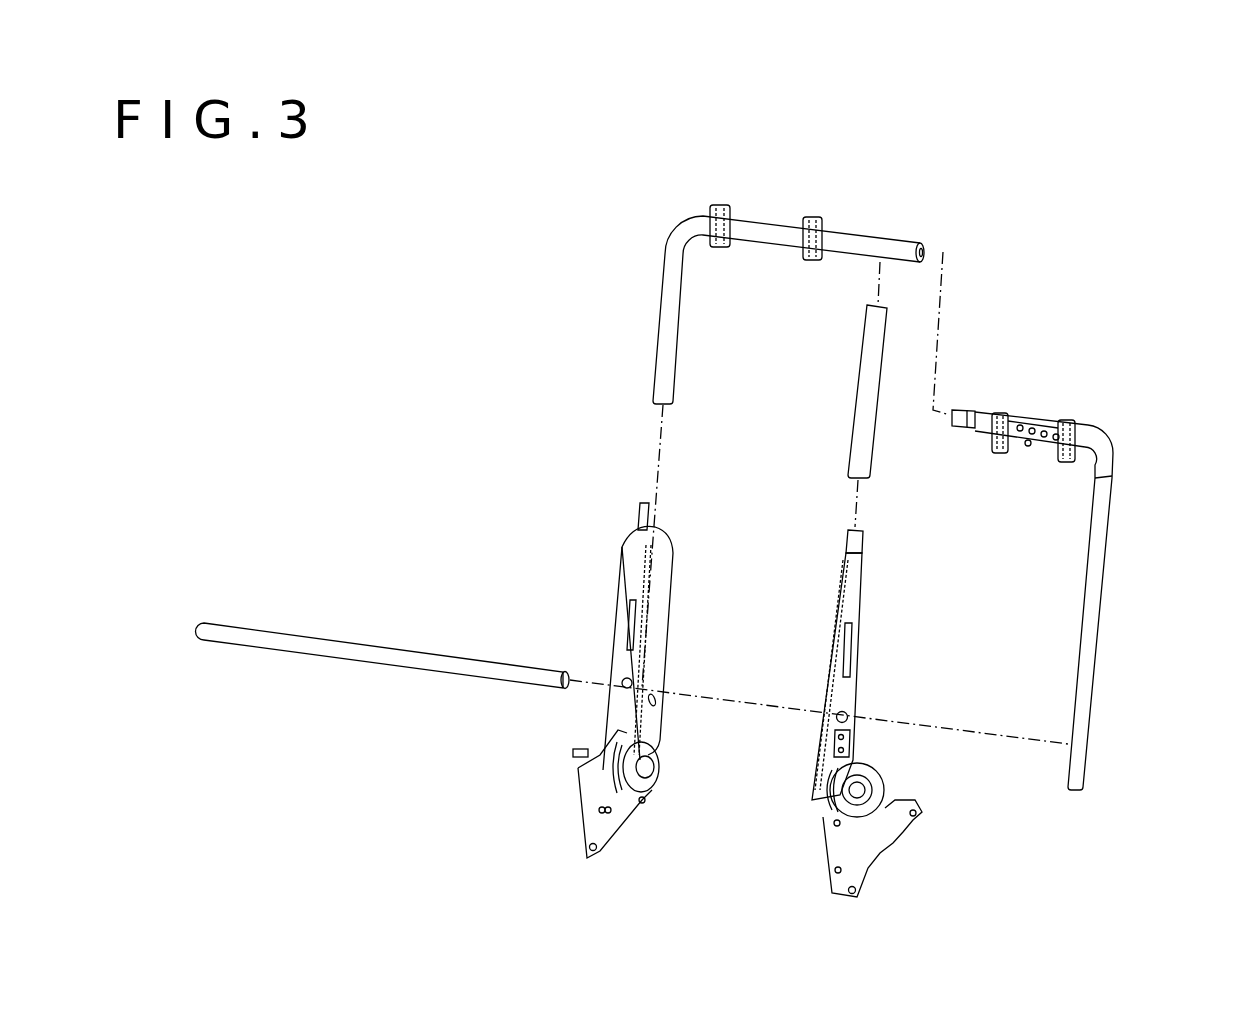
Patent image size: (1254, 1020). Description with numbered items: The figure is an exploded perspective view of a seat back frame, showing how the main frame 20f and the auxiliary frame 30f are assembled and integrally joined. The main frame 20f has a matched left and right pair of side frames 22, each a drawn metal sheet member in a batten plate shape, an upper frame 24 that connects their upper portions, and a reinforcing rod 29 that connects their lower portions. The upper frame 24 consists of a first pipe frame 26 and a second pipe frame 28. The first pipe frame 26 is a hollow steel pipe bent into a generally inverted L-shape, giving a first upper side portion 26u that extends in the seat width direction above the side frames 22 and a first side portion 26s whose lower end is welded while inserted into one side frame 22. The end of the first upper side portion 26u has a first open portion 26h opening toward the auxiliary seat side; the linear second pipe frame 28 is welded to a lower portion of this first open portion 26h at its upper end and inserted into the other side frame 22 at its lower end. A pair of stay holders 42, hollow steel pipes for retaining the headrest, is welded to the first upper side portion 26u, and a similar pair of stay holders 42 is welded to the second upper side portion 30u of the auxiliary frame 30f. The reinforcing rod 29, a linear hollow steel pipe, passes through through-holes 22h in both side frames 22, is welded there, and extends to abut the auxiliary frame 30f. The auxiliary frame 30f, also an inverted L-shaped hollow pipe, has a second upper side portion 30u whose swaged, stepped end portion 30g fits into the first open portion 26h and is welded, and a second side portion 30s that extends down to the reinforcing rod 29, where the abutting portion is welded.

The main frame 20f is at (628, 233).
The side frame 22 is at (660, 577).
The through-hole 22h is at (633, 683).
The upper frame 24 is at (781, 293).
The first pipe frame 26 is at (775, 218).
The first side portion 26s is at (668, 343).
The first upper side portion 26u is at (757, 240).
The first open portion 26h is at (920, 242).
The second pipe frame 28 is at (862, 367).
The reinforcing rod 29 is at (348, 652).
The auxiliary frame 30f is at (1112, 423).
The end portion 30g is at (952, 420).
The second upper side portion 30u is at (975, 425).
The second side portion 30s is at (1093, 604).
The stay holder 42 is at (718, 205).